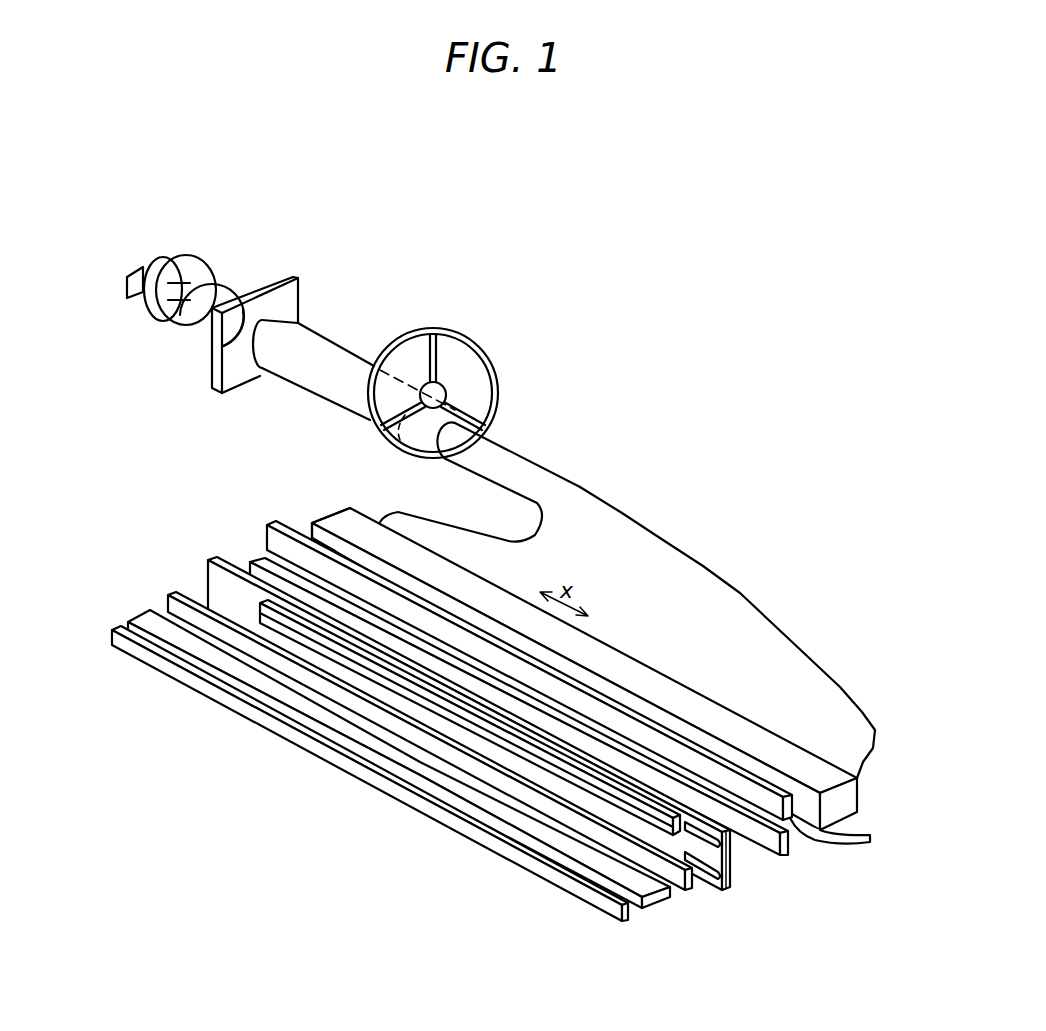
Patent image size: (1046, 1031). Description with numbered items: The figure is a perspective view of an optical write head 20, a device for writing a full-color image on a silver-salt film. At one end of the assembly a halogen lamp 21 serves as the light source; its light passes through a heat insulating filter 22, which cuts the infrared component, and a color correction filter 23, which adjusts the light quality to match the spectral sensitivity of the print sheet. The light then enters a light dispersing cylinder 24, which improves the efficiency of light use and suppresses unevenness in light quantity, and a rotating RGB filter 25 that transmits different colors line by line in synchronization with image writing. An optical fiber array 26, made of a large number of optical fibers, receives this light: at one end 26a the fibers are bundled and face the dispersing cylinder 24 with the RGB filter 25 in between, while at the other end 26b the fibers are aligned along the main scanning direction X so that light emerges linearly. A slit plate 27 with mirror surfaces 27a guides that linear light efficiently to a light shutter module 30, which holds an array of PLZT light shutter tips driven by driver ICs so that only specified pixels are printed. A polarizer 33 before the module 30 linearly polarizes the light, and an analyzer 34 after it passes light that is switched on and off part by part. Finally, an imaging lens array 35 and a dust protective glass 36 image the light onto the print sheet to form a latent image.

The optical write head 20 is at (640, 262).
The halogen lamp 21 is at (190, 260).
The heat insulating filter 22 is at (243, 290).
The color correction filter 23 is at (300, 294).
The light dispersing cylinder 24 is at (367, 347).
The RGB filter 25 is at (470, 337).
The optical fiber array 26 is at (740, 593).
The end of optical fiber array 26a is at (462, 463).
The other end of optical fiber array 26b is at (343, 512).
The slit plate 27 is at (720, 748).
The mirror surfaces 27a is at (870, 839).
The light shutter module 30 is at (735, 883).
The polarizer 33 is at (758, 842).
The analyzer 34 is at (687, 885).
The imaging lens array 35 is at (652, 900).
The dust protective glass 36 is at (505, 852).